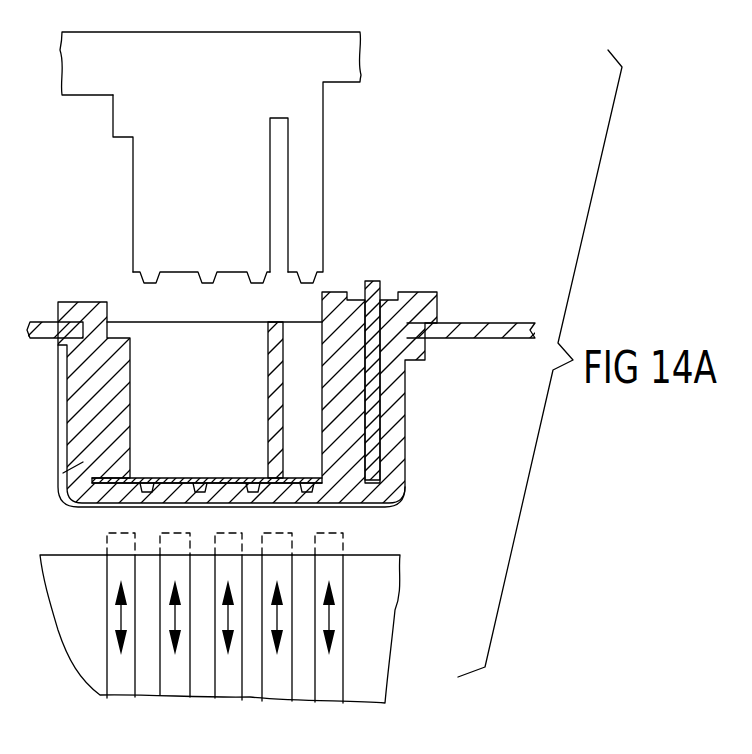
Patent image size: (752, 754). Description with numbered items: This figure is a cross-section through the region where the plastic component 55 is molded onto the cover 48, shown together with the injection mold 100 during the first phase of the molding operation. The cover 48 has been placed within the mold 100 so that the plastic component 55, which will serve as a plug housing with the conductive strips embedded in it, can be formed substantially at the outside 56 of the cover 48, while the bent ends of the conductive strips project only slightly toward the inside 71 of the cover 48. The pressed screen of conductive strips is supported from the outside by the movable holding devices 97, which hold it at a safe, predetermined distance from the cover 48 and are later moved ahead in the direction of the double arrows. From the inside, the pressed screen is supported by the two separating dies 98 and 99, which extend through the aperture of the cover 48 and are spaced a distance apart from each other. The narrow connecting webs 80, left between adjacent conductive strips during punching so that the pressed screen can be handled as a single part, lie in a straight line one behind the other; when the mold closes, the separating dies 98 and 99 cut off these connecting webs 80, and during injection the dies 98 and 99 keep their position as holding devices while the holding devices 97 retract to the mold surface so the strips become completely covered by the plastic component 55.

The mold 100 is at (305, 50).
The separating die 98 is at (150, 193).
The separating die 99 is at (313, 178).
The inside of the cover 71 is at (49, 325).
The cover 48 is at (485, 324).
The outside of the cover 56 is at (487, 340).
The connecting web 80 is at (306, 482).
The plastic component 55 is at (60, 487).
The movable holding device 97 is at (327, 678).